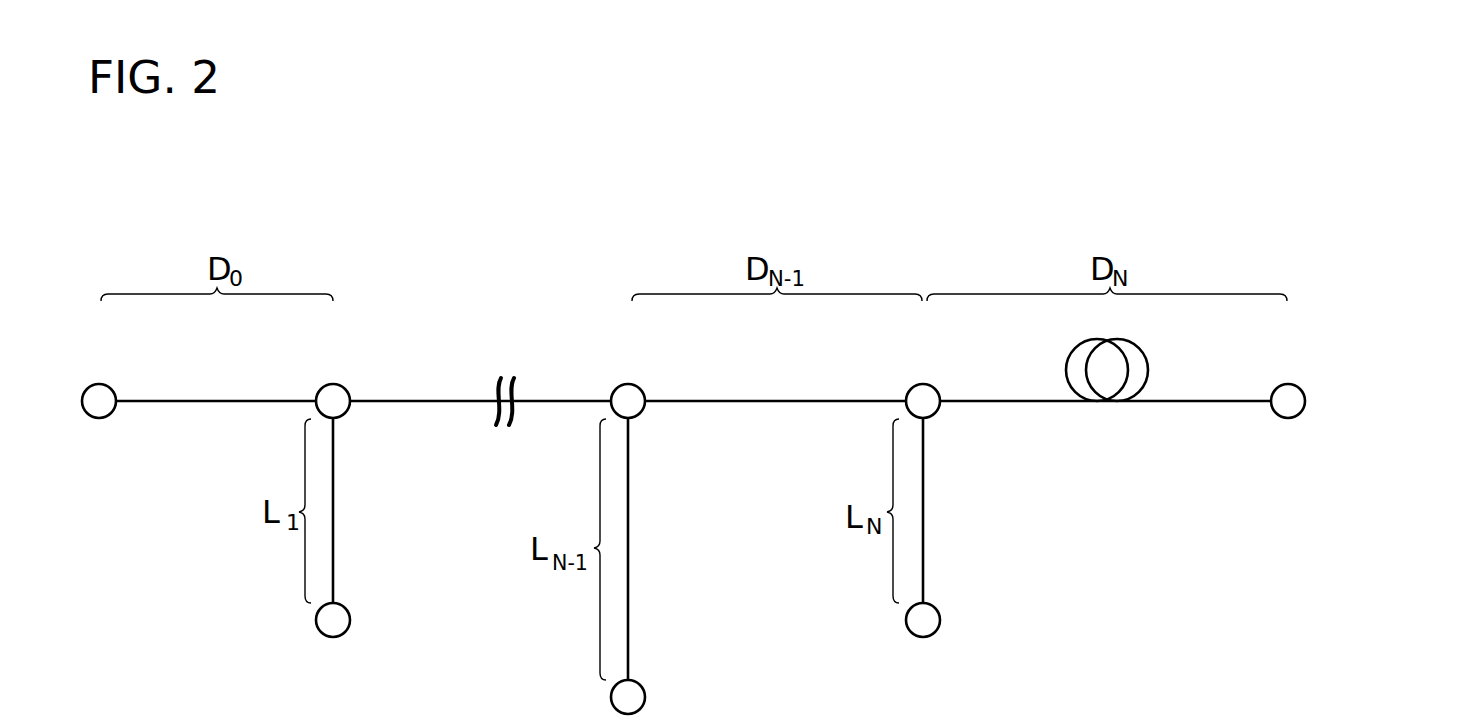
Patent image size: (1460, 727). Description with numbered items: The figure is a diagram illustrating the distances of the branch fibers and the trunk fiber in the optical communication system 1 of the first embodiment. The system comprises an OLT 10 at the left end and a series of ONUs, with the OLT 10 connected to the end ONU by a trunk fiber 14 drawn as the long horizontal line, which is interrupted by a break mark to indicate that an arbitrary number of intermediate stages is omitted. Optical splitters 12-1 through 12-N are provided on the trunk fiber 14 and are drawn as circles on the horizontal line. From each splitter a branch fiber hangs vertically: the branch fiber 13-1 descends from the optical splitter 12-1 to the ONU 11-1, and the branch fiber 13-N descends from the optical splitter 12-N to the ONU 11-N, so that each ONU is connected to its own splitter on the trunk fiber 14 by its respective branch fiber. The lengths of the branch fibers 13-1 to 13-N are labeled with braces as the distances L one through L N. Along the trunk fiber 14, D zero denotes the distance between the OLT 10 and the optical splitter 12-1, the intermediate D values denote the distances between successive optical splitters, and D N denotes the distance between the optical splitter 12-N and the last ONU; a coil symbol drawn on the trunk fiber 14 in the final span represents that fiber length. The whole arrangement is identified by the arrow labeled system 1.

The optical communication system 1 is at (1163, 169).
The OLT 10 is at (110, 388).
The optical splitter 12-1 is at (344, 388).
The optical splitter 12-N is at (934, 388).
The branch fiber 13-1 is at (335, 487).
The branch fiber 13-N is at (925, 487).
The ONU 11-1 is at (344, 607).
The ONU 11-N is at (934, 607).
The trunk fiber 14 is at (1206, 402).